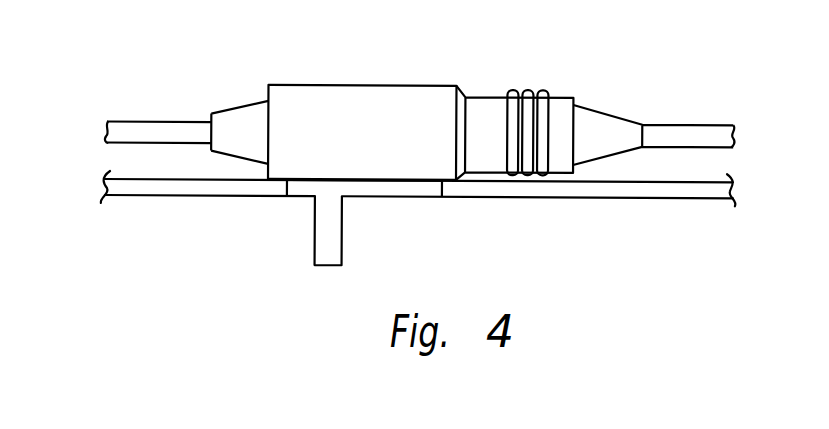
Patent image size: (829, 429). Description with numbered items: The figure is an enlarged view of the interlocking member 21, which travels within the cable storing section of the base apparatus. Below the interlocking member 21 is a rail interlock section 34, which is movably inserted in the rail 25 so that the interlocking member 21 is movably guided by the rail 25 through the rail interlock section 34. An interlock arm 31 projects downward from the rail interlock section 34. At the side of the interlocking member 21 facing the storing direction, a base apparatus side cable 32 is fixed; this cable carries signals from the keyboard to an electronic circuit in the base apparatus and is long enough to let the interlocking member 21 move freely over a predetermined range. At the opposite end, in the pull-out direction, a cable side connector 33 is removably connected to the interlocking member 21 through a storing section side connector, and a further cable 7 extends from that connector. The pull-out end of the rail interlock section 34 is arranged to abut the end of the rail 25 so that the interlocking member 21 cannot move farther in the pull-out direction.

The optical fiber 7 is at (686, 128).
The interlocking member 21 is at (352, 107).
The rail 25 is at (647, 188).
The interlock arm 31 is at (322, 204).
The base apparatus side cable 32 is at (143, 125).
The cable side connector 33 is at (480, 102).
The rail interlock section 34 is at (411, 188).